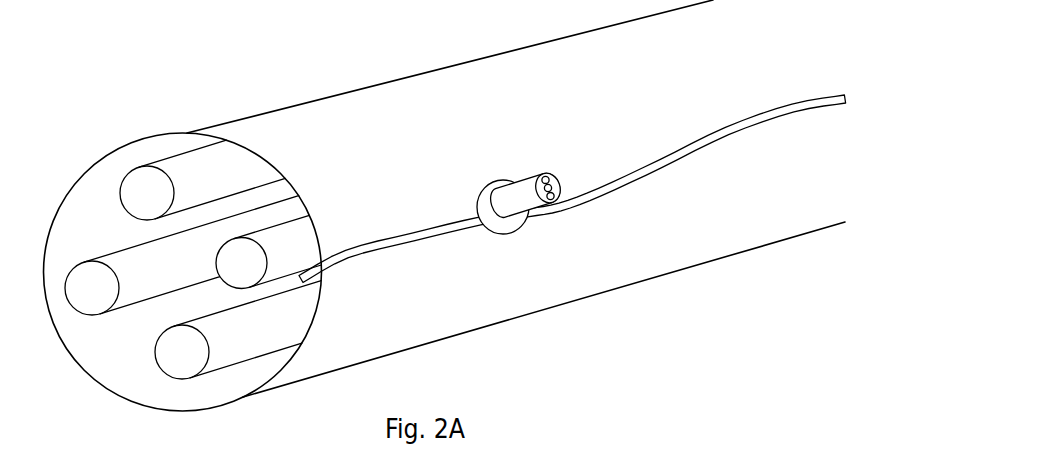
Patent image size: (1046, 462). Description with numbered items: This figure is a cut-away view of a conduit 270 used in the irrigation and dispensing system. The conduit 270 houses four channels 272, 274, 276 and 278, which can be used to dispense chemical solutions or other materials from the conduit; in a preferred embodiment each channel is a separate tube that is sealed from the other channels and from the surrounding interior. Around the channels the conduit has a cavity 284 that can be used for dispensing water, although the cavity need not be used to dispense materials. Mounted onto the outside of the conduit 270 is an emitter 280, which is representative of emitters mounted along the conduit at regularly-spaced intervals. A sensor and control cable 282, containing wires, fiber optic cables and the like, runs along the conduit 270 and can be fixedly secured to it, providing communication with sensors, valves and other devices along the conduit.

The conduit 270 is at (360, 88).
The channel 272 is at (226, 186).
The channel 274 is at (312, 260).
The channel 276 is at (191, 274).
The channel 278 is at (271, 336).
The emitter 280 is at (494, 233).
The sensor and control cable 282 is at (596, 201).
The cavity 284 is at (136, 352).